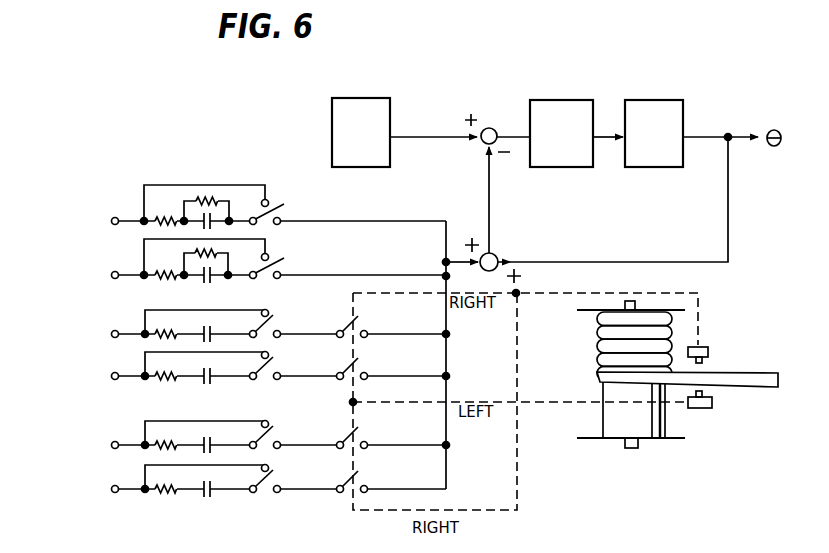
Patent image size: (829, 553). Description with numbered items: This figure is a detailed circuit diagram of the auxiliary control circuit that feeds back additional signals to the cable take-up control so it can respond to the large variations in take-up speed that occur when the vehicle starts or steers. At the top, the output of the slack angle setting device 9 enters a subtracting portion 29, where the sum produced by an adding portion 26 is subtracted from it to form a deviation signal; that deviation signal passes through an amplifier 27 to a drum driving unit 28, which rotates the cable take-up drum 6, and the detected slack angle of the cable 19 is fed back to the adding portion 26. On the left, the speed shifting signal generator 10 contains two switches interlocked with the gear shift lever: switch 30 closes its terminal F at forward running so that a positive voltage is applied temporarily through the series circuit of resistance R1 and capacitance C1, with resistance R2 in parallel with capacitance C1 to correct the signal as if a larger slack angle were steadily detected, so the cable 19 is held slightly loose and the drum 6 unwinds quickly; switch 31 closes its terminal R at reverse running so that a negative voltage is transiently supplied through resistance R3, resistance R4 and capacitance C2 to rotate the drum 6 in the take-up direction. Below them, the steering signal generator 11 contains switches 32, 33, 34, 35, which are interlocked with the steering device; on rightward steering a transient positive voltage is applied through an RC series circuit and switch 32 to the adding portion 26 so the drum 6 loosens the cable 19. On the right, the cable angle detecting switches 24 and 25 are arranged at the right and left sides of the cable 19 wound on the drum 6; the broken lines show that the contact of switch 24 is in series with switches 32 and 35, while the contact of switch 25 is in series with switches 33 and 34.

The cable take-up drum 6 is at (655, 438).
The slack angle setting device 9 is at (360, 98).
The speed shifting signal generator 10 is at (88, 188).
The steering signal generator 11 is at (82, 310).
The cable 19 is at (735, 372).
The cable angle detecting switch 24 is at (707, 345).
The cable angle detecting switch 25 is at (712, 402).
The adding portion 26 is at (497, 254).
The amplifier 27 is at (558, 100).
The drum driving unit 28 is at (645, 100).
The subtracting portion 29 is at (489, 128).
The switch 30 is at (261, 188).
The switch 31 is at (261, 269).
The switch 32 is at (279, 324).
The switch 33 is at (279, 366).
The switch 34 is at (279, 430).
The switch 35 is at (280, 482).
The resistance R1 is at (165, 216).
The resistance R2 is at (207, 198).
The resistance R3 is at (164, 270).
The resistance R4 is at (215, 256).
The capacitance C1 is at (215, 218).
The capacitance C2 is at (207, 283).